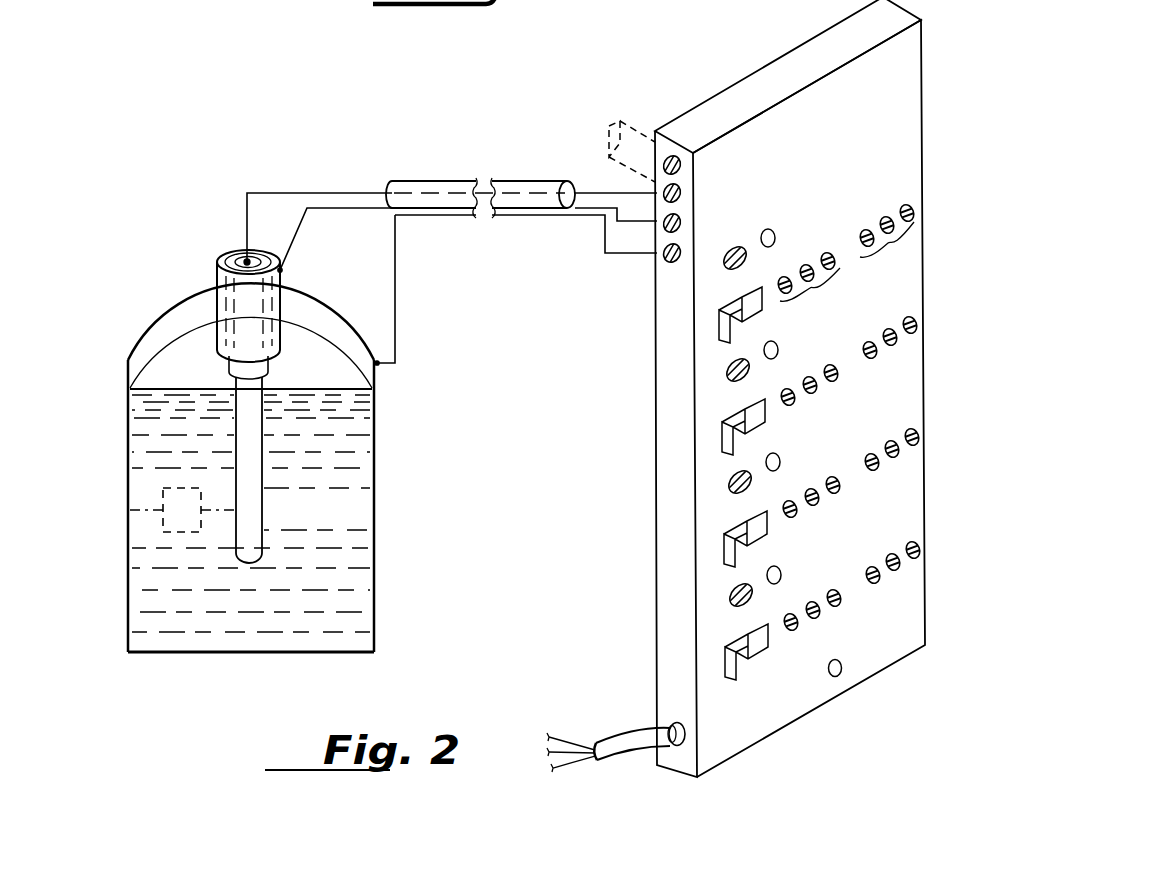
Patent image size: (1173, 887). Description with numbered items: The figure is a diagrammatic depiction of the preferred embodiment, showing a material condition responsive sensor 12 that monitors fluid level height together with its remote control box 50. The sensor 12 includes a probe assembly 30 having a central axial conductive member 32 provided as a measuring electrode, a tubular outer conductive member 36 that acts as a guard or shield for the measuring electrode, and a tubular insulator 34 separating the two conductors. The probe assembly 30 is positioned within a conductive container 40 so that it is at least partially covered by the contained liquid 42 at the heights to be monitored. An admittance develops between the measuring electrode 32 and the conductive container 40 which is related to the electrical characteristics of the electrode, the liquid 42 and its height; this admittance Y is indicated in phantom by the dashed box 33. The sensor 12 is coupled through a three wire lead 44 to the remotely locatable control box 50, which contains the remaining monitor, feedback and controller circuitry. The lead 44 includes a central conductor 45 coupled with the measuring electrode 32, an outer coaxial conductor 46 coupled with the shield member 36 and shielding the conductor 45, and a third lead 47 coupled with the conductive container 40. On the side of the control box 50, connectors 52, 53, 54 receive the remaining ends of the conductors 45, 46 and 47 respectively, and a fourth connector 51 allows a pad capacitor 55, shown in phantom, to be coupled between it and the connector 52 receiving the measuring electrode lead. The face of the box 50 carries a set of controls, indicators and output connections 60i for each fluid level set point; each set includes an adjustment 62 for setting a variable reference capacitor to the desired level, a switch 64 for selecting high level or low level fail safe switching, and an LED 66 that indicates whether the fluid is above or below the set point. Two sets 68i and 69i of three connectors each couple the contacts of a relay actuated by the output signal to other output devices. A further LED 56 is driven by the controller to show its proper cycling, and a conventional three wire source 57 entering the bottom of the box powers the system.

The material condition responsive sensor 12 is at (166, 246).
The probe assembly 30 is at (266, 440).
The central axial conductive member 32 is at (247, 258).
The admittance 33 is at (165, 518).
The tubular insulator 34 is at (222, 258).
The tubular outer conductive member 36 is at (275, 318).
The conductive container 40 is at (172, 333).
The contained liquid 42 is at (345, 500).
The three wire lead 44 is at (455, 180).
The central conductor 45 is at (305, 191).
The outer coaxial conductor 46 is at (333, 210).
The third lead 47 is at (398, 268).
The control box 50 is at (777, 68).
The fourth connector 51 is at (679, 160).
The connector 52 is at (680, 188).
The connector 53 is at (680, 218).
The connector 54 is at (680, 248).
The pad capacitor 55 is at (607, 139).
The LED 56 is at (838, 676).
The three wire 120 VAC source 57 is at (571, 738).
The set of controls, indicators and output connections 60i is at (850, 216).
The adjustment 62 is at (724, 266).
The switch 64 is at (740, 312).
The LED 66 is at (773, 230).
The set of three connectors 68i is at (808, 287).
The set of three connectors 69i is at (887, 241).